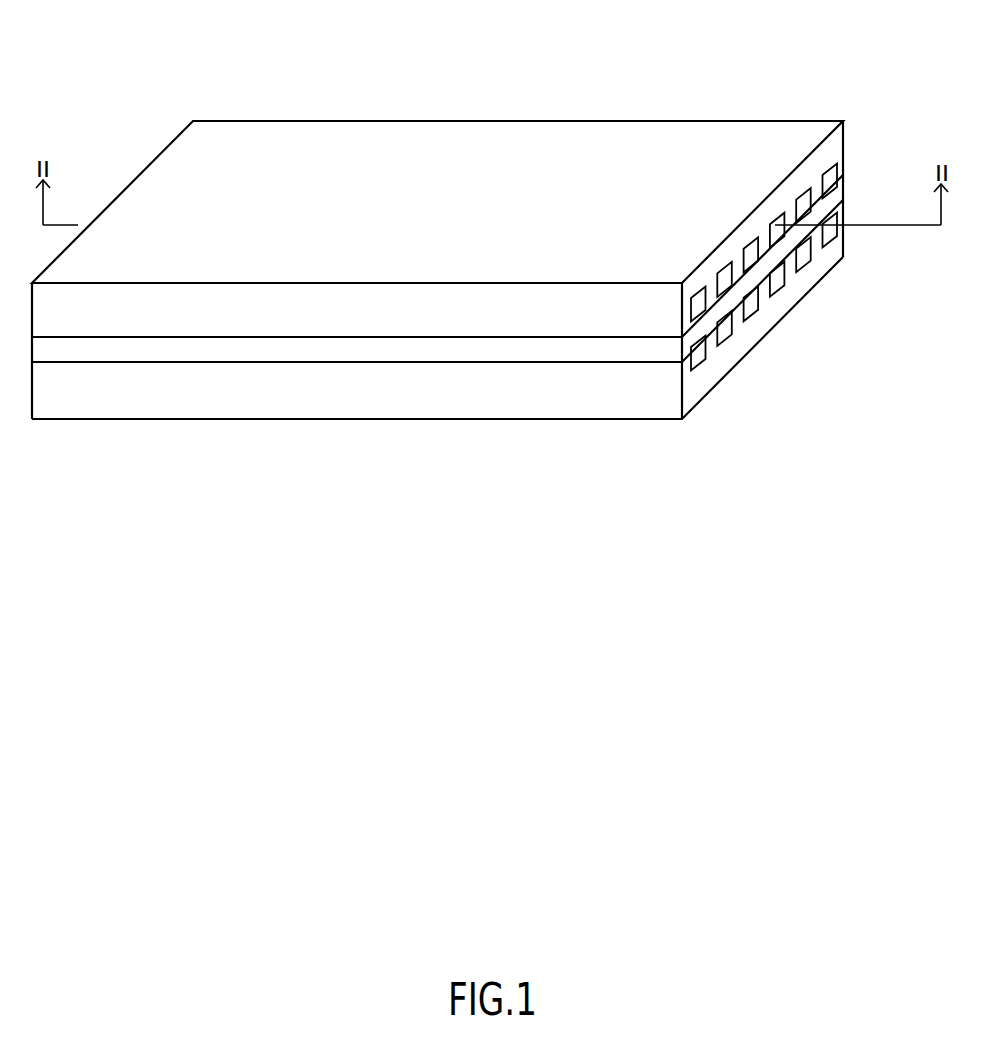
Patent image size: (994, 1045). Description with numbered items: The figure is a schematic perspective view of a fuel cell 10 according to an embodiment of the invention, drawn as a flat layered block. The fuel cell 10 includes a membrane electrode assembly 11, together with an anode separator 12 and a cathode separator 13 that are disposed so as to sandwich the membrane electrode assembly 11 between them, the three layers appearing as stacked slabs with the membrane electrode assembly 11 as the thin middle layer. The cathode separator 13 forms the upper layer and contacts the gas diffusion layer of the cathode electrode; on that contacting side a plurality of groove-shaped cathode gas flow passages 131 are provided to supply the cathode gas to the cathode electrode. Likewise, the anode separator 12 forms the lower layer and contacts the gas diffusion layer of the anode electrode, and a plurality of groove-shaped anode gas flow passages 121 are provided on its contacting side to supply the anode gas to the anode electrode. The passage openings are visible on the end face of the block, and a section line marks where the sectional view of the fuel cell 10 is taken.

The fuel cell 10 is at (506, 101).
The membrane electrode assembly 11 is at (835, 193).
The anode separator 12 is at (793, 290).
The anode gas flow passages 121 is at (805, 253).
The cathode separator 13 is at (810, 165).
The cathode gas flow passages 131 is at (823, 172).